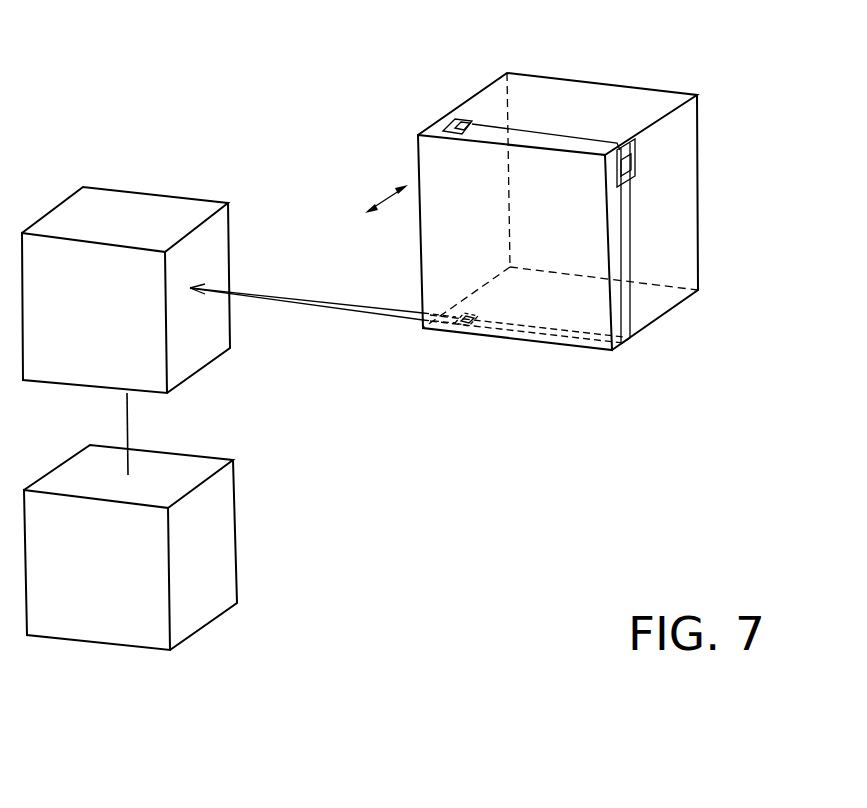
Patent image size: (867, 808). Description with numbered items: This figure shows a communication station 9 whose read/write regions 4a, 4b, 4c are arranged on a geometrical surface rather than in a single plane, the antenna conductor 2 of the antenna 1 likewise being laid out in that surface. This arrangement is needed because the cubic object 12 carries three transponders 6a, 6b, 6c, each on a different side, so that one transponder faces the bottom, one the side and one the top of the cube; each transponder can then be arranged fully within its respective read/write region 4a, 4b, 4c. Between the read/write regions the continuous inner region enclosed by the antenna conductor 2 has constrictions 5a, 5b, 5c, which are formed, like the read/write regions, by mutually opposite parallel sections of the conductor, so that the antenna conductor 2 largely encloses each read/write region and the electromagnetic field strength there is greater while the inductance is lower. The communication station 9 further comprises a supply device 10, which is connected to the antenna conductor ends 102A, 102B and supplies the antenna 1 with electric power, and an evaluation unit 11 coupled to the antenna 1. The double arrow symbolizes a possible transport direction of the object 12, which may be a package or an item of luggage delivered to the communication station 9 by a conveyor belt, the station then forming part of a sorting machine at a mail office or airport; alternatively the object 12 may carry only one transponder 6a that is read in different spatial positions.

The antenna 1 is at (323, 337).
The antenna conductor 2 is at (324, 318).
The read/write region 4a is at (475, 325).
The read/write region 4b is at (633, 177).
The read/write region 4c is at (445, 127).
The constriction 5a is at (532, 332).
The constriction 5b is at (628, 238).
The constriction 5c is at (497, 127).
The transponder 6a is at (463, 328).
The transponder 6b is at (635, 170).
The transponder 6c is at (462, 123).
The communication station 9 is at (361, 459).
The supply device 10 is at (145, 207).
The evaluation unit 11 is at (200, 585).
The object 12 is at (563, 214).
The antenna conductor end 102A is at (197, 286).
The antenna conductor end 102B is at (192, 291).